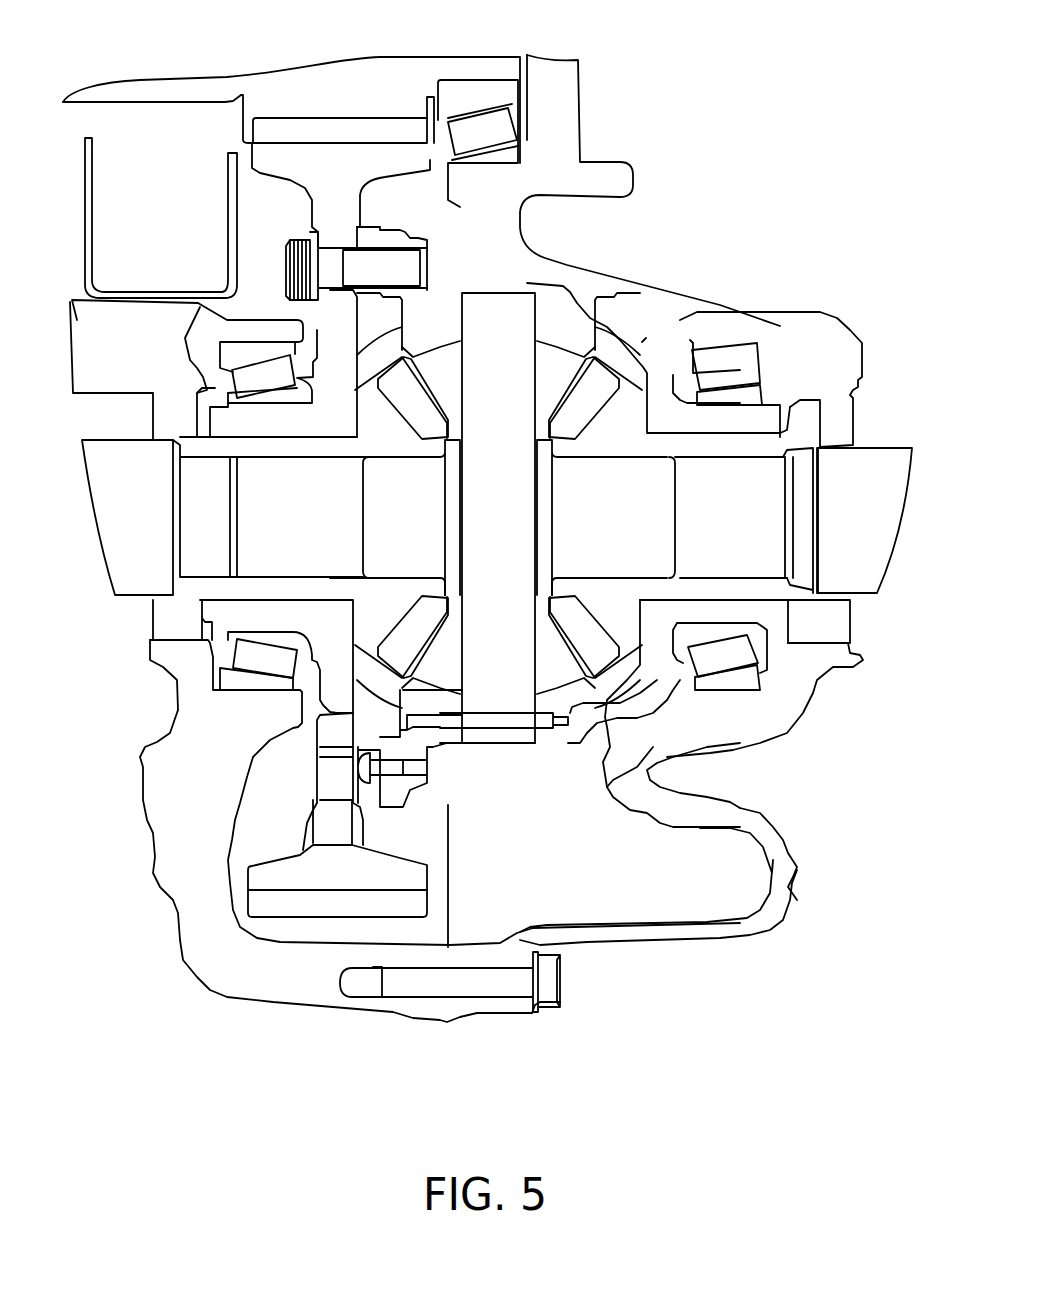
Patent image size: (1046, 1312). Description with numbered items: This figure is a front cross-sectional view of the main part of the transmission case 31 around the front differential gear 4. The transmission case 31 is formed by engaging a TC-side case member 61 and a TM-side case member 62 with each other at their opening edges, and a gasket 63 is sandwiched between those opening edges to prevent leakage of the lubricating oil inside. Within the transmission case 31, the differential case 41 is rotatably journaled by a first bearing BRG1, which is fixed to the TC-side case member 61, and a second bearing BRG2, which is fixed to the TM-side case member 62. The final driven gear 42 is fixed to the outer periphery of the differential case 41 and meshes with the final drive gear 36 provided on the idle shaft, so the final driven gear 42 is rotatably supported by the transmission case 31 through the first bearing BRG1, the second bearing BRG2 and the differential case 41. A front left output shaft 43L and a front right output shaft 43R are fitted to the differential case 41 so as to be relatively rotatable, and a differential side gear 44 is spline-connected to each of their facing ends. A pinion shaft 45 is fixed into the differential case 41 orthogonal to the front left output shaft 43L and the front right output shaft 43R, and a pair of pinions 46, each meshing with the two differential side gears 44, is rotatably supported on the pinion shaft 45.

The final drive gear 36 is at (352, 65).
The pinion shaft 45 is at (513, 307).
The differential case 41 is at (563, 320).
The pinion 46 is at (628, 422).
The front differential gear 4 is at (641, 339).
The differential side gear 44 is at (630, 420).
The first bearing BRG1 is at (733, 377).
The second bearing BRG2 is at (243, 376).
The front left output shaft 43L is at (112, 533).
The front right output shaft 43R is at (897, 530).
The final driven gear 42 is at (262, 877).
The gasket 63 is at (448, 868).
The TM-side case member 62 is at (252, 992).
The transmission case 31 is at (492, 1030).
The TC-side case member 61 is at (715, 930).